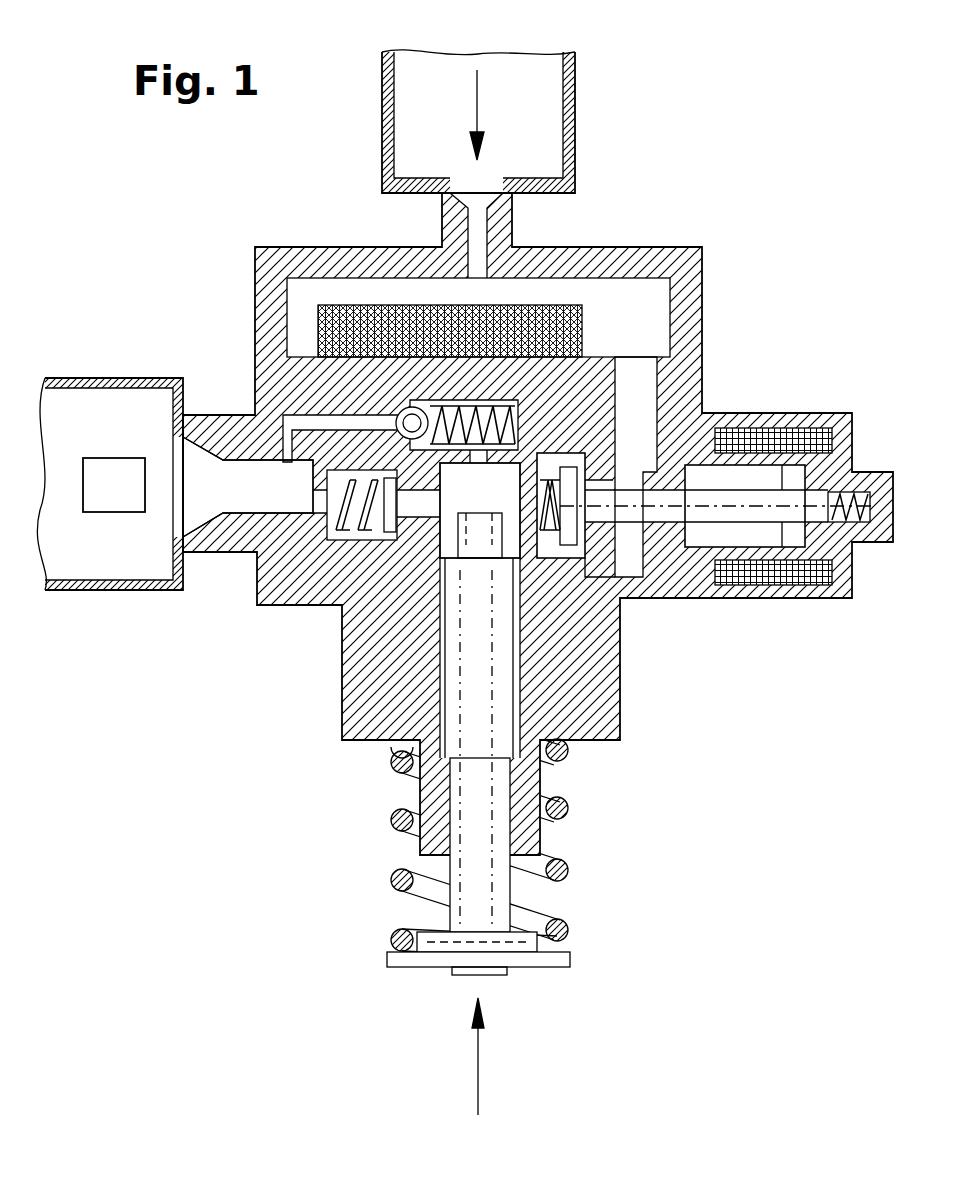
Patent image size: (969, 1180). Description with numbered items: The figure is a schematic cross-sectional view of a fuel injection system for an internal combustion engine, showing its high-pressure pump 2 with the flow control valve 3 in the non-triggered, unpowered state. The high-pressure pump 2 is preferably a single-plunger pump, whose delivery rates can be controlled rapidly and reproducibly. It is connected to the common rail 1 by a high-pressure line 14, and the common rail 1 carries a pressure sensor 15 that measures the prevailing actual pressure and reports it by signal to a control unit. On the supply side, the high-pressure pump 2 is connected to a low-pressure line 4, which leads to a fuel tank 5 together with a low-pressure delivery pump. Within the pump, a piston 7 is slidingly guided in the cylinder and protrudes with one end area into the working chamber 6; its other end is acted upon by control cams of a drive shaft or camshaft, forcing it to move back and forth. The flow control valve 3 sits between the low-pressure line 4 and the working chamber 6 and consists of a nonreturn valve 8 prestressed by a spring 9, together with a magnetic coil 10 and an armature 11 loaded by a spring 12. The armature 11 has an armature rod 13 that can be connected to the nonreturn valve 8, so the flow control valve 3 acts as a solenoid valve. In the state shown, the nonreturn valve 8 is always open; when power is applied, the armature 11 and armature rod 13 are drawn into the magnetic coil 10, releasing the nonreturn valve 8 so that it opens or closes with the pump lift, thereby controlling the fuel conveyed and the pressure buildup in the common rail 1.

The common rail 1 is at (85, 418).
The high-pressure pump 2 is at (562, 841).
The flow control valve 3 is at (573, 567).
The low-pressure line 4 is at (652, 312).
The fuel tank 5 is at (567, 118).
The working chamber 6 is at (463, 495).
The piston 7 is at (477, 661).
The nonreturn valve 8 is at (592, 470).
The spring 9 is at (575, 468).
The magnetic coil 10 is at (787, 430).
The armature 11 is at (758, 528).
The spring 12 is at (850, 517).
The armature rod 13 is at (660, 503).
The high-pressure line 14 is at (253, 488).
The pressure sensor 15 is at (118, 485).